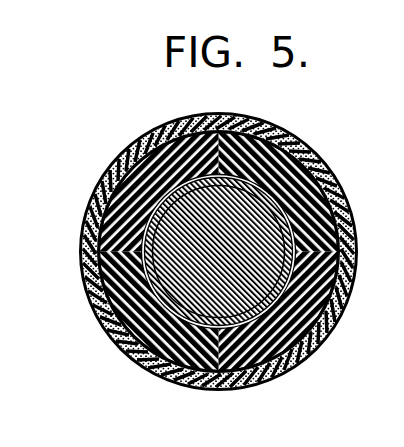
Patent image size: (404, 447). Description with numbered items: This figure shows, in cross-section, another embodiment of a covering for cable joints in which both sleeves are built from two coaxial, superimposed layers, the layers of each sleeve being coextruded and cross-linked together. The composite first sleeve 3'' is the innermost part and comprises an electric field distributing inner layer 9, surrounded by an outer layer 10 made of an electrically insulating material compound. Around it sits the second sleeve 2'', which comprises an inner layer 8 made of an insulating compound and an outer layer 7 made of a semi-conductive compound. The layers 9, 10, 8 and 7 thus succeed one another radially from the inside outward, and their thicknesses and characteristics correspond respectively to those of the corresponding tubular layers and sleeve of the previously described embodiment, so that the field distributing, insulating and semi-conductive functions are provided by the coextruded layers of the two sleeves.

The second sleeve 2'' is at (217, 247).
The composite first sleeve 3'' is at (201, 251).
The outer layer 7 is at (312, 156).
The inner layer 8 is at (334, 182).
The electric field distributing inner layer 9 is at (283, 232).
The outer layer 10 is at (303, 272).